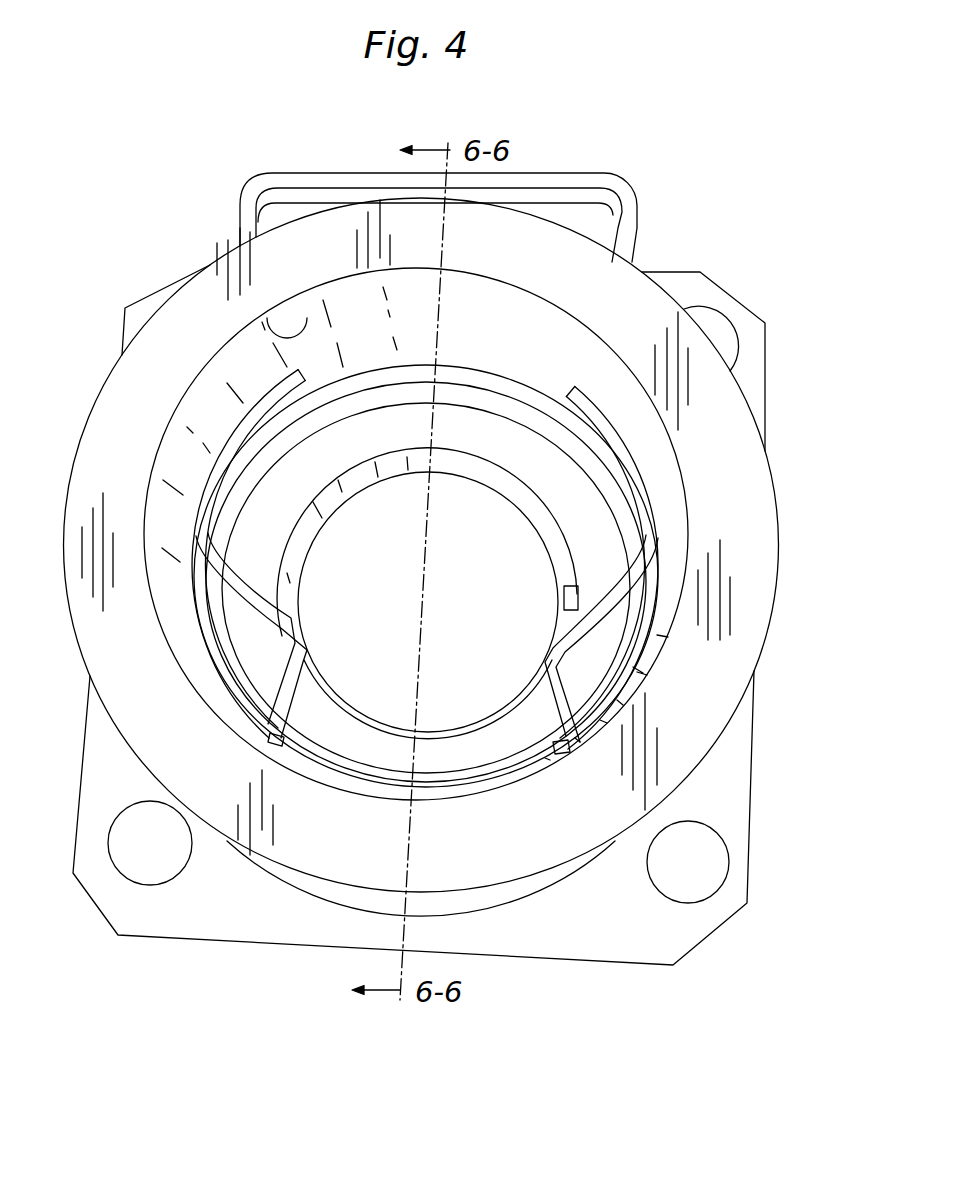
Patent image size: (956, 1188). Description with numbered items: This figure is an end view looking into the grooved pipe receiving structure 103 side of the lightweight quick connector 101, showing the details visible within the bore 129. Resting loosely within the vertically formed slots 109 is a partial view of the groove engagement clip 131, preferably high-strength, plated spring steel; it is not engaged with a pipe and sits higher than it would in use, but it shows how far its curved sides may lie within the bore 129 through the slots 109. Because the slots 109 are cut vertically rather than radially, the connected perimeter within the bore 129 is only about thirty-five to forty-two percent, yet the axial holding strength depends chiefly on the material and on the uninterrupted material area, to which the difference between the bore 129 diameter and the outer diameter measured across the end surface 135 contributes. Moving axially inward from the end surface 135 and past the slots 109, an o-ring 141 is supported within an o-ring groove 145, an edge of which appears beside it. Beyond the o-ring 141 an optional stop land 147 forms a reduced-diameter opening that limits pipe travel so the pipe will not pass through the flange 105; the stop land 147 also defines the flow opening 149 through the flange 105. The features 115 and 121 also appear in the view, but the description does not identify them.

The lightweight quick connector 101 is at (761, 253).
The grooved pipe receiving structure 103 is at (636, 260).
The flange 105 is at (693, 290).
The slots 109 is at (241, 445).
The recess 115 is at (283, 341).
The mounting hole 121 is at (727, 345).
The bore 129 is at (208, 397).
The groove engagement clip 131 is at (250, 171).
The end surface 135 is at (688, 350).
The o-ring 141 is at (477, 417).
The o-ring groove 145 is at (520, 412).
The stop land 147 is at (280, 555).
The flow opening 149 is at (357, 480).